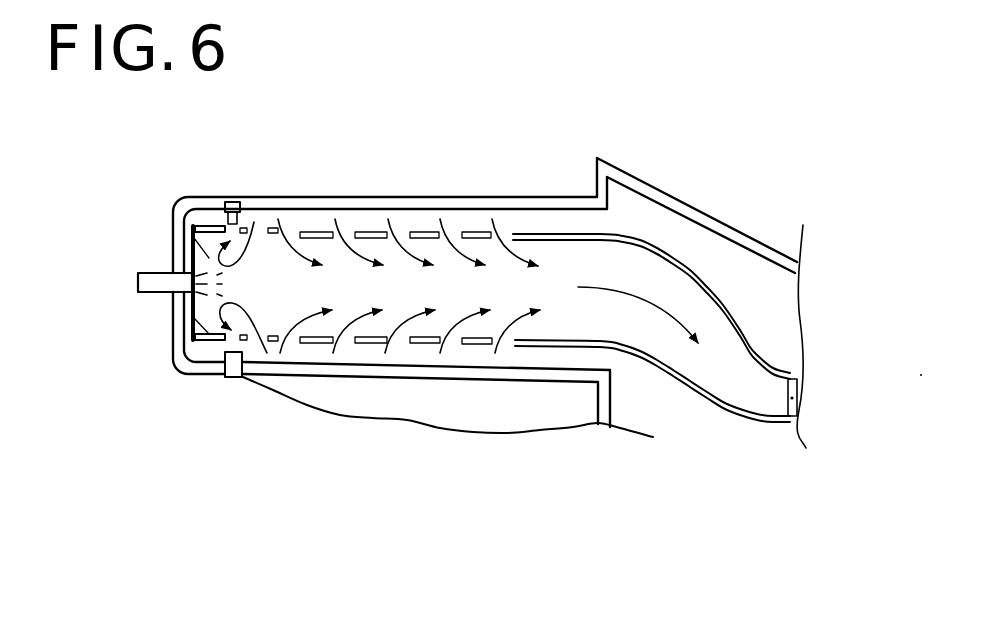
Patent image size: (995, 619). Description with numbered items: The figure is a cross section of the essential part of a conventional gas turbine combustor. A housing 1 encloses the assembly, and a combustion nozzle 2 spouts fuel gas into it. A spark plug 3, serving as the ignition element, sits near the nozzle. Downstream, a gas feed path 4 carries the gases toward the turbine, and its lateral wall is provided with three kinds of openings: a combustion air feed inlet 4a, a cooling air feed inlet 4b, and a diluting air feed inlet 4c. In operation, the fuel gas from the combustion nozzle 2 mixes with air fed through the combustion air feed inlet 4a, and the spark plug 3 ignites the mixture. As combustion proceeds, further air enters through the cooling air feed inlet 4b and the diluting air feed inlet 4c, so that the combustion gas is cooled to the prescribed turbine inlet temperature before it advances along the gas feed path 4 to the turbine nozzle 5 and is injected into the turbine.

The housing 1 is at (568, 206).
The combustion nozzle 2 is at (155, 281).
The spark plug 3 is at (232, 202).
The gas feed path 4 is at (687, 264).
The combustion air feed inlet 4a is at (258, 224).
The cooling air feed inlet 4b is at (353, 232).
The diluting air feed inlet 4c is at (511, 224).
The turbine nozzle 5 is at (797, 398).